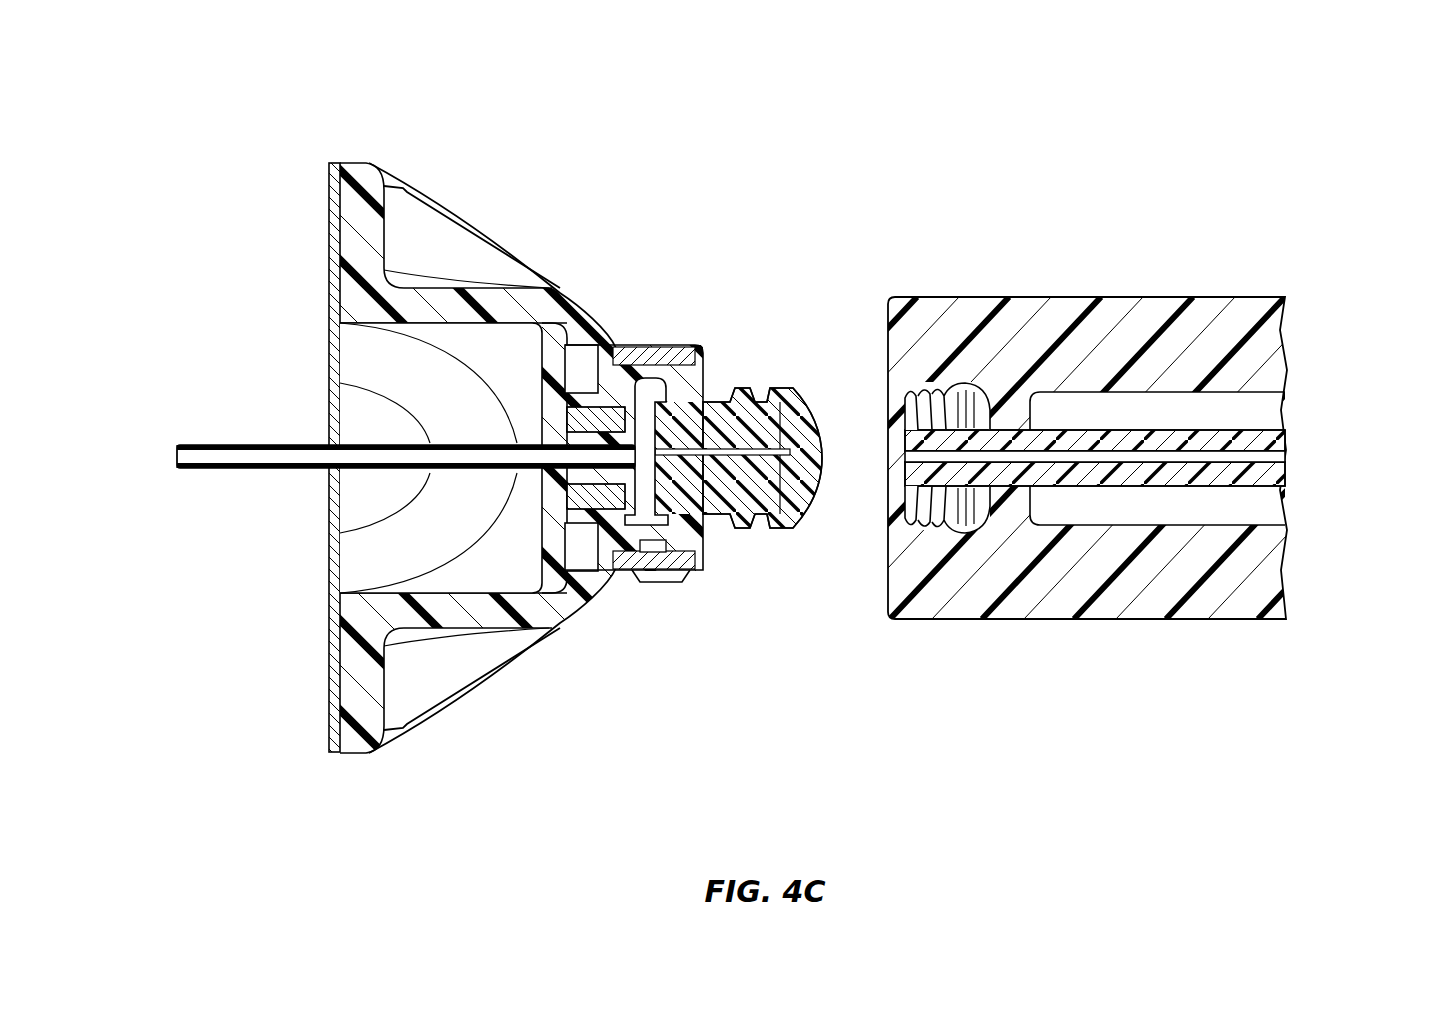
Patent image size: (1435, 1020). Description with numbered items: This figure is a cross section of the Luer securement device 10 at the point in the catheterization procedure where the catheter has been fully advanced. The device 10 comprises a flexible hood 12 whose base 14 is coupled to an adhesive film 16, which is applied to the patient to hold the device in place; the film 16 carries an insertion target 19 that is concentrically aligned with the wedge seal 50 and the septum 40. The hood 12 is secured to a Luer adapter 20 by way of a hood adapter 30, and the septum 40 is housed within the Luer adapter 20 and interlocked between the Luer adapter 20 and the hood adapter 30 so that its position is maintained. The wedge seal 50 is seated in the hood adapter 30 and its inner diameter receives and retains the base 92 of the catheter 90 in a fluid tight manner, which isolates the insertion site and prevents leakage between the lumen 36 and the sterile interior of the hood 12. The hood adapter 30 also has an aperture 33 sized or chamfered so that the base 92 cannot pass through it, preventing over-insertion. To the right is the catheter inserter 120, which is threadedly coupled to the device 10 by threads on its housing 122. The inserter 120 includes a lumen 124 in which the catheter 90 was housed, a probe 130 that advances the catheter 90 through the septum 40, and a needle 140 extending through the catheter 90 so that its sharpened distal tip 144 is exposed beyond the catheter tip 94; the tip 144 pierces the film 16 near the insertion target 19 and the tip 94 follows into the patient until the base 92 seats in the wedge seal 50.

The Luer securement device 10 is at (542, 176).
The flexible hood 12 is at (434, 203).
The base 14 is at (359, 172).
The adhesive film 16 is at (329, 218).
The insertion target 19 is at (330, 435).
The Luer adapter 20 is at (645, 347).
The hood adapter 30 is at (605, 570).
The aperture 33 is at (545, 488).
The lumen 36 is at (650, 410).
The septum 40 is at (800, 430).
The wedge seal 50 is at (547, 480).
The catheter 90 is at (432, 446).
The base 92 is at (650, 569).
The tip 94 is at (177, 463).
The catheter inserter 120 is at (1202, 265).
The housing 122 is at (1134, 620).
The lumen 124 is at (1257, 406).
The probe 130 is at (1250, 486).
The needle 140 is at (1270, 458).
The sharpened distal tip 144 is at (943, 460).